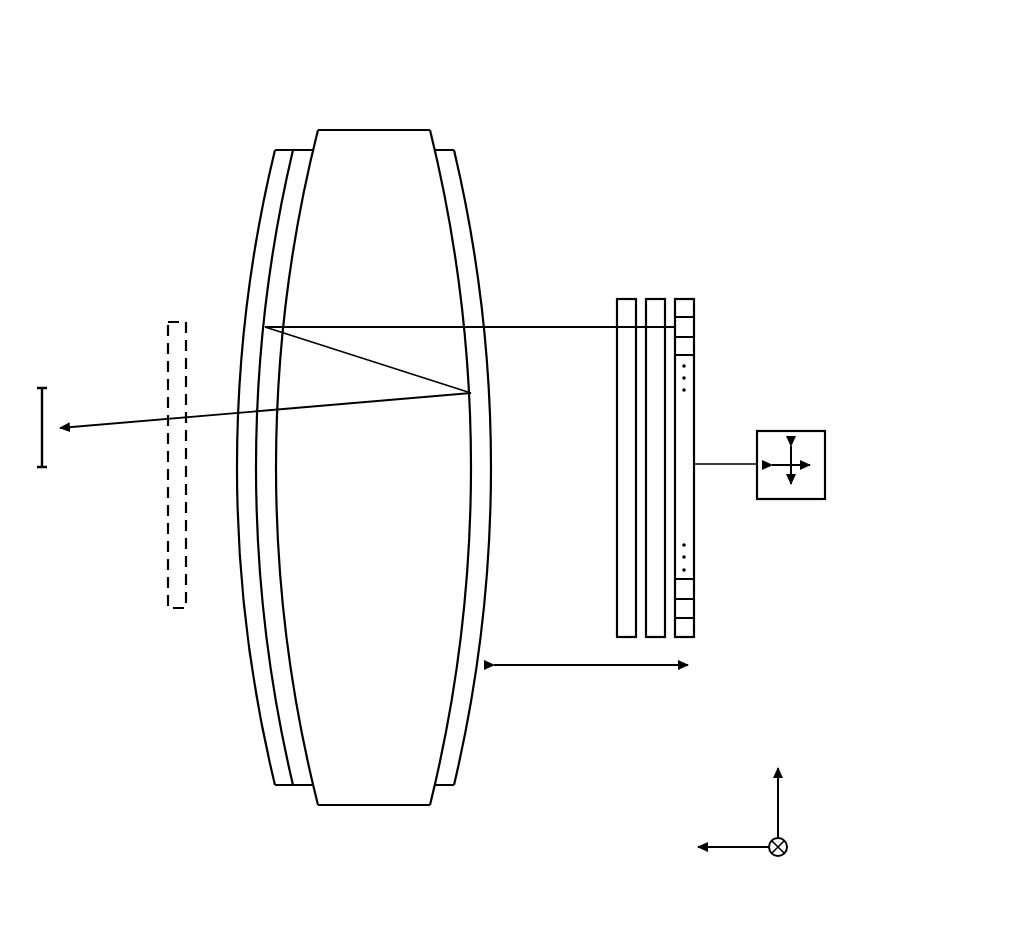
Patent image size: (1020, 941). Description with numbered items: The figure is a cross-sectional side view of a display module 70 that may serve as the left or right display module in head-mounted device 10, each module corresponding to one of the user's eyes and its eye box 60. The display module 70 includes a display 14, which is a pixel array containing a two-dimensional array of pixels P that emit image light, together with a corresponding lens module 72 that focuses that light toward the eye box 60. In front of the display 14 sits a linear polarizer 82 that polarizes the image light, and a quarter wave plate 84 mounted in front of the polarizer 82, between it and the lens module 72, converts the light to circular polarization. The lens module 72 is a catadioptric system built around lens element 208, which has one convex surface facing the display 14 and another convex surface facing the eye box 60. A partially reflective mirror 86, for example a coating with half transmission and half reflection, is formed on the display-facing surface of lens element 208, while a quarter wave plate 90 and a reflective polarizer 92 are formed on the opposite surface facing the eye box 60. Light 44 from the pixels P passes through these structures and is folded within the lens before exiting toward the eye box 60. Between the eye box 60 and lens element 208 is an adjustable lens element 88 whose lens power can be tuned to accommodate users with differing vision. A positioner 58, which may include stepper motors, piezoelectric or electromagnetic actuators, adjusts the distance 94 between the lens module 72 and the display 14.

The head-mounted device 10 is at (684, 66).
The lens module 72 is at (193, 58).
The lens element 208 is at (377, 808).
The quarter wave plate 90 is at (300, 155).
The reflective polarizer 92 is at (263, 197).
The partially reflective mirror 86 is at (455, 165).
The display module 70 is at (716, 233).
The quarter wave plate 84 is at (627, 300).
The linear polarizer 82 is at (656, 300).
The display 14 is at (696, 400).
The pixels P is at (688, 345).
The positioner 58 is at (826, 437).
The eye box 60 is at (45, 400).
The light 44 is at (118, 425).
The adjustable lens element 88 is at (168, 578).
The distance 94 is at (598, 670).